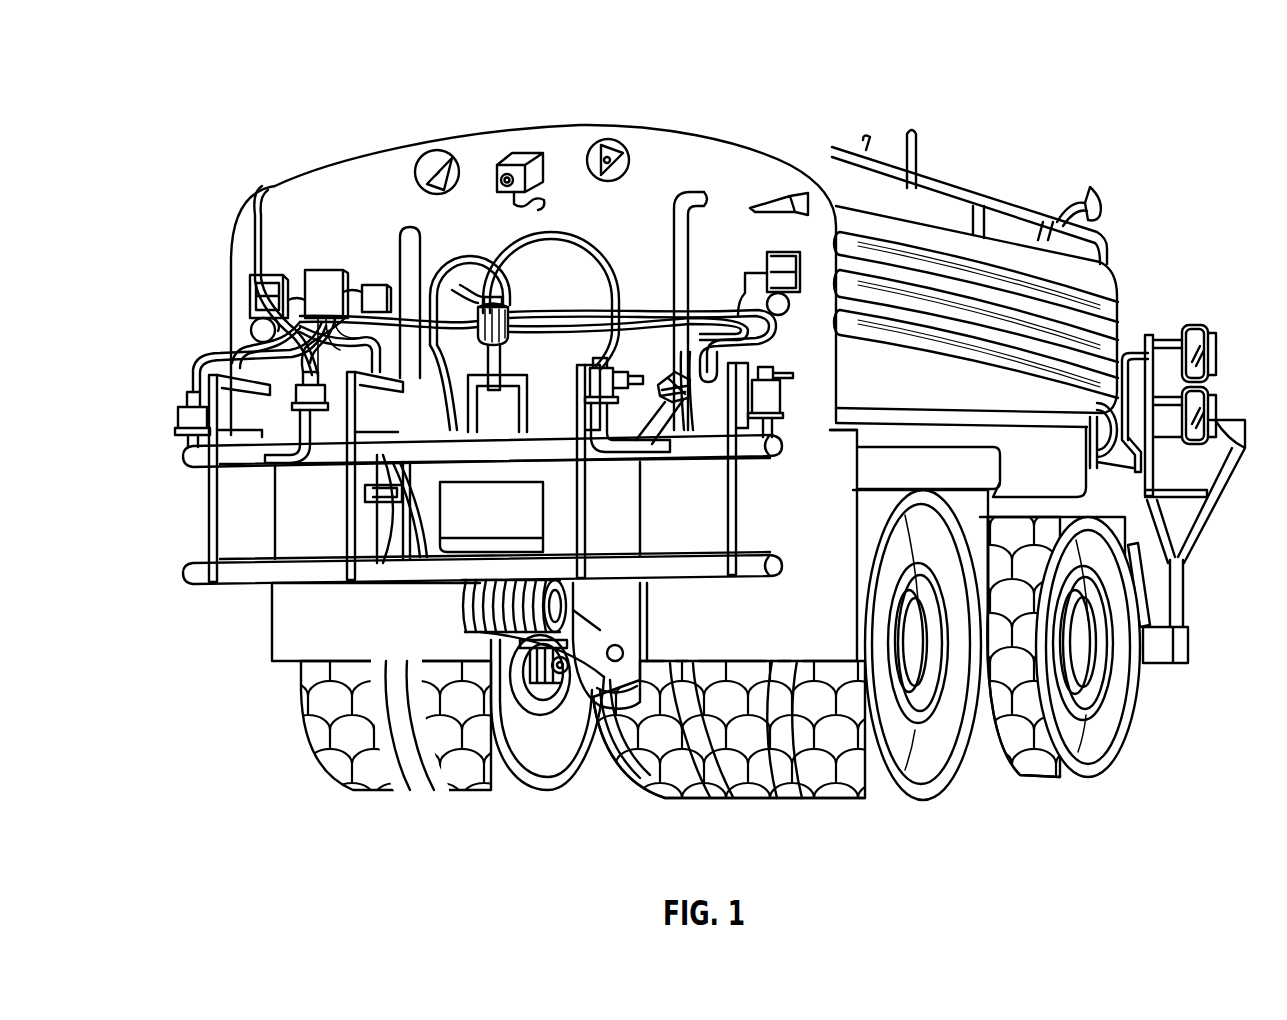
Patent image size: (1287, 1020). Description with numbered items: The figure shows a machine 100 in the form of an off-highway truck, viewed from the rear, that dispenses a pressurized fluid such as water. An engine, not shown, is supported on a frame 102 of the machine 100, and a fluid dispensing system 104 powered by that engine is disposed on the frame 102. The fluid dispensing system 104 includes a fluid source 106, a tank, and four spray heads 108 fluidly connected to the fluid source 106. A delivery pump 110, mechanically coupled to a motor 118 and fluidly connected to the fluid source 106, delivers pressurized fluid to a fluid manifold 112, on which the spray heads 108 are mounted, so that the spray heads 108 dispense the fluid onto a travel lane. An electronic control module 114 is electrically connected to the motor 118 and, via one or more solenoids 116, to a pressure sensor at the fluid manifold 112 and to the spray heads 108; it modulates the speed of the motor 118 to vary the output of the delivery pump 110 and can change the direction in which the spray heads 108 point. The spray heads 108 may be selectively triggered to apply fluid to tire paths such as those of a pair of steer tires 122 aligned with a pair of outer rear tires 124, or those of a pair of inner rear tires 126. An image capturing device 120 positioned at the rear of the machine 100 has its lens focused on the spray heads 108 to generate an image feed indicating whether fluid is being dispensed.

The machine 100 is at (298, 59).
The frame 102 is at (965, 519).
The fluid dispensing system 104 is at (141, 342).
The fluid source 106 is at (382, 206).
The spray heads 108 is at (190, 412).
The delivery pump 110 is at (493, 432).
The fluid manifold 112 is at (699, 447).
The electronic control module 114 is at (326, 280).
The solenoids 116 is at (372, 296).
The motor 118 is at (484, 300).
The image capturing device 120 is at (520, 152).
The steer tires 122 is at (665, 777).
The outer rear tires 124 is at (380, 794).
The inner rear tires 126 is at (497, 794).